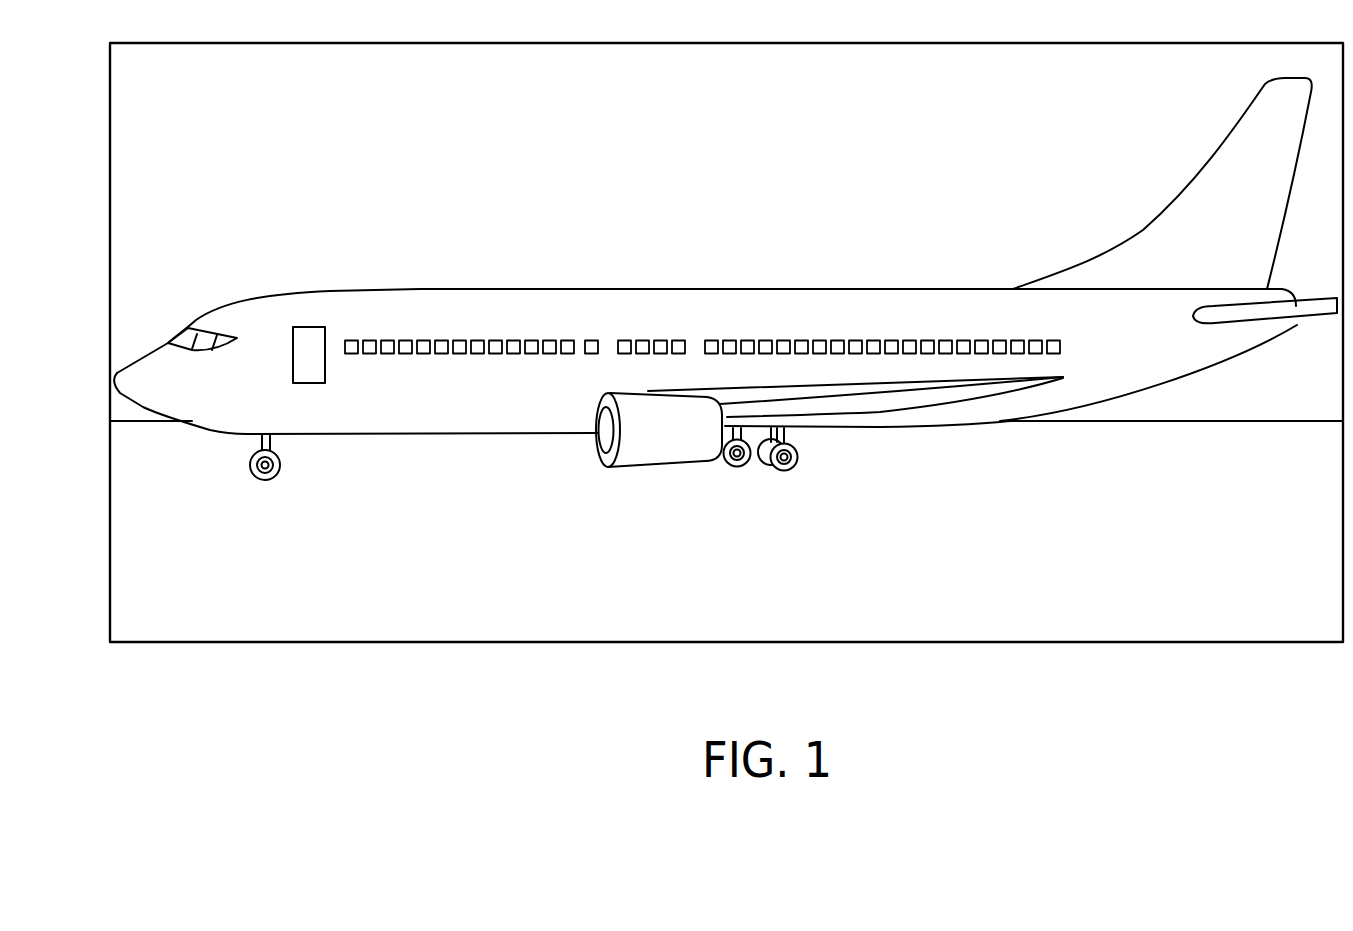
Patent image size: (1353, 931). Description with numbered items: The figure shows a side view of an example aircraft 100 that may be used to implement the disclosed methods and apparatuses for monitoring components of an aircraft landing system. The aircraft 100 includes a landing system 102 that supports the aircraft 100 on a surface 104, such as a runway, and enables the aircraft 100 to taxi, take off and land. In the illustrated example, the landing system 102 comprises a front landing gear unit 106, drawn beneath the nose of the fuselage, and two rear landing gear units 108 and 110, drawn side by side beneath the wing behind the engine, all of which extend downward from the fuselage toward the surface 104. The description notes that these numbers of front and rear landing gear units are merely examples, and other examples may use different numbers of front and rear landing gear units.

The aircraft 100 is at (754, 214).
The landing system 102 is at (815, 472).
The surface 104 is at (1073, 481).
The front landing gear unit 106 is at (268, 481).
The rear landing gear unit 108 is at (734, 470).
The rear landing gear unit 110 is at (787, 471).